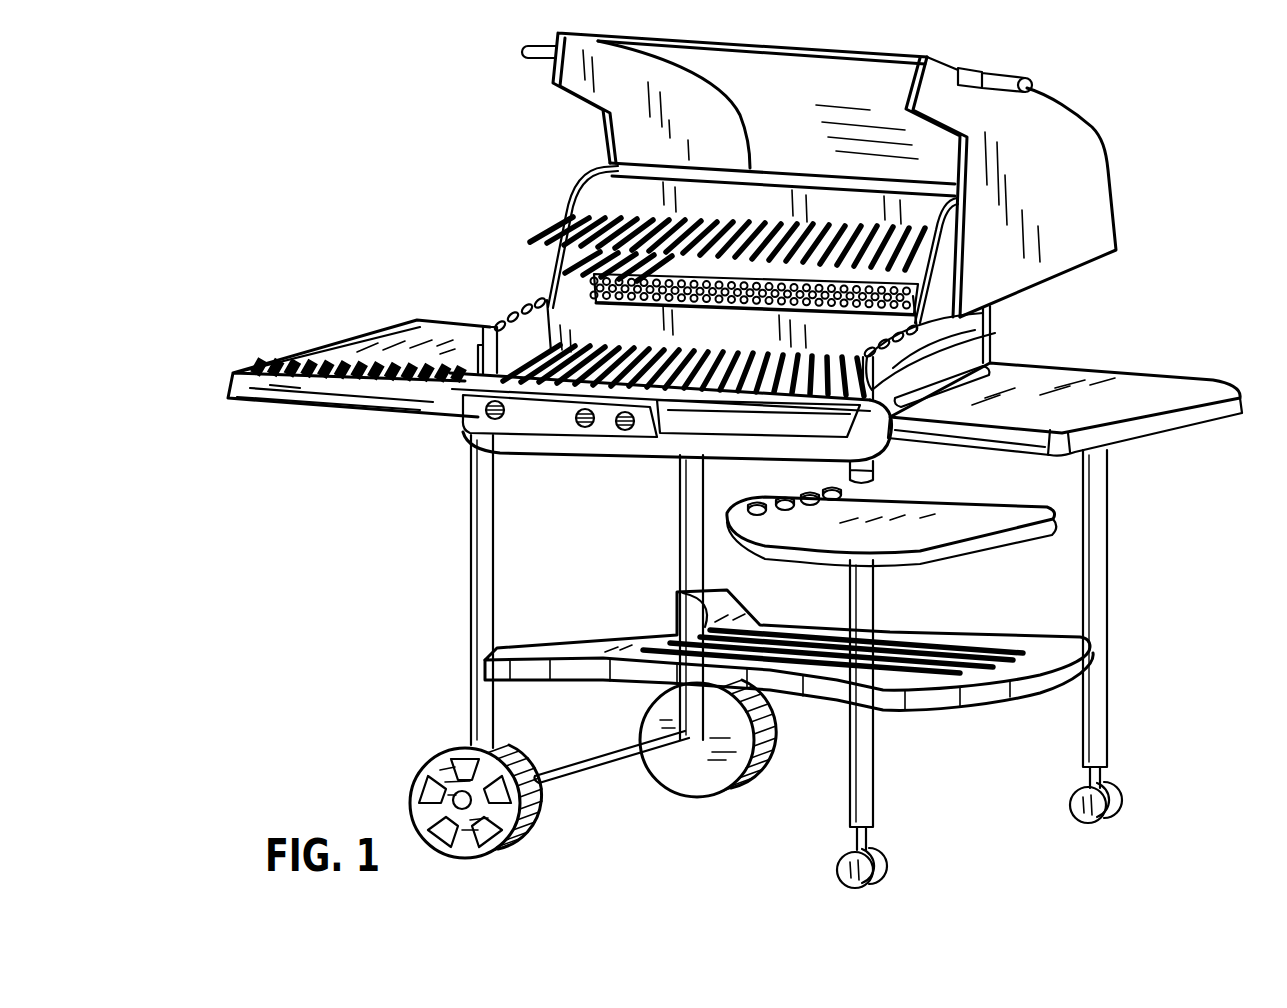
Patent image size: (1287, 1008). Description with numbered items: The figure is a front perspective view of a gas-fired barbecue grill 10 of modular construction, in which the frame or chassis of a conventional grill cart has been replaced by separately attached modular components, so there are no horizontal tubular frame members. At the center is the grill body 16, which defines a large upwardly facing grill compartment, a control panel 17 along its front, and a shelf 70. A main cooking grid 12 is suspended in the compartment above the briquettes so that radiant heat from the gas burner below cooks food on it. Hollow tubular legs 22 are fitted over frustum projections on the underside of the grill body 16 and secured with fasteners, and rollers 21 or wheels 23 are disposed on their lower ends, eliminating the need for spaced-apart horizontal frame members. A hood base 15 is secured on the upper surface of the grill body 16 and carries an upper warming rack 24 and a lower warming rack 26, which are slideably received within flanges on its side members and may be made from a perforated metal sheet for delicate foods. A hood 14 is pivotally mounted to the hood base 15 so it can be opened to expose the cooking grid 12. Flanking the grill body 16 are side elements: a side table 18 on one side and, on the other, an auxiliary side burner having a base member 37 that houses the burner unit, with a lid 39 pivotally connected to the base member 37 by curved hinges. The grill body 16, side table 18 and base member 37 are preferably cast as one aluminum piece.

The gas-fired barbecue grill 10 is at (1103, 116).
The main cooking grid 12 is at (620, 347).
The hood 14 is at (1090, 207).
The hood base 15 is at (947, 340).
The grill body 16 is at (830, 430).
The control panel 17 is at (563, 420).
The side table 18 is at (1127, 387).
The rollers 21 is at (1100, 820).
The tubular legs 22 is at (1100, 670).
The wheels 23 is at (443, 760).
The upper warming rack 24 is at (590, 228).
The lower warming rack 26 is at (583, 258).
The base member 37 is at (407, 400).
The lid 39 is at (403, 343).
The shelf 70 is at (677, 433).